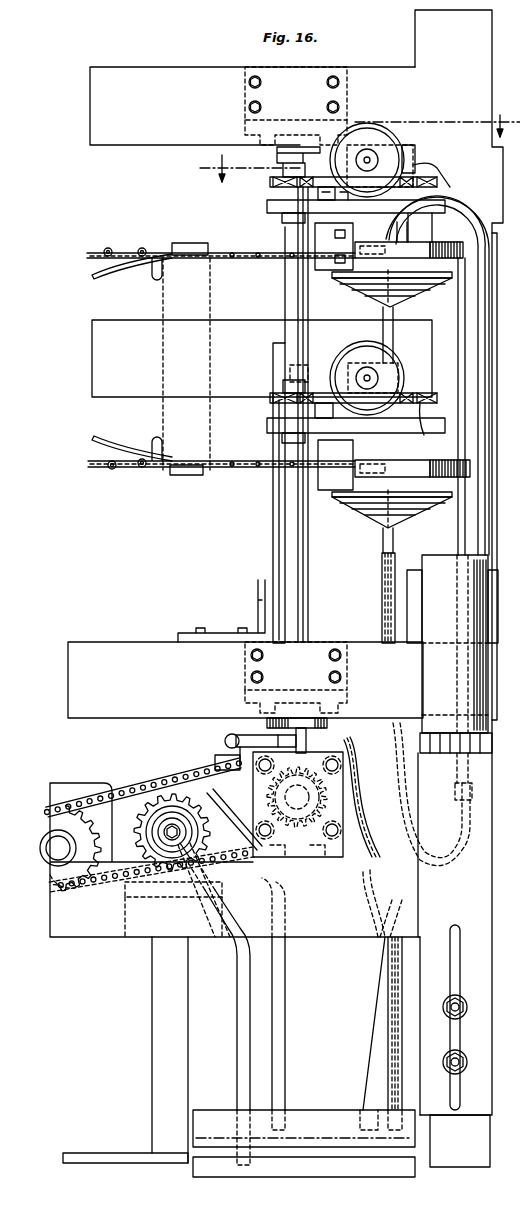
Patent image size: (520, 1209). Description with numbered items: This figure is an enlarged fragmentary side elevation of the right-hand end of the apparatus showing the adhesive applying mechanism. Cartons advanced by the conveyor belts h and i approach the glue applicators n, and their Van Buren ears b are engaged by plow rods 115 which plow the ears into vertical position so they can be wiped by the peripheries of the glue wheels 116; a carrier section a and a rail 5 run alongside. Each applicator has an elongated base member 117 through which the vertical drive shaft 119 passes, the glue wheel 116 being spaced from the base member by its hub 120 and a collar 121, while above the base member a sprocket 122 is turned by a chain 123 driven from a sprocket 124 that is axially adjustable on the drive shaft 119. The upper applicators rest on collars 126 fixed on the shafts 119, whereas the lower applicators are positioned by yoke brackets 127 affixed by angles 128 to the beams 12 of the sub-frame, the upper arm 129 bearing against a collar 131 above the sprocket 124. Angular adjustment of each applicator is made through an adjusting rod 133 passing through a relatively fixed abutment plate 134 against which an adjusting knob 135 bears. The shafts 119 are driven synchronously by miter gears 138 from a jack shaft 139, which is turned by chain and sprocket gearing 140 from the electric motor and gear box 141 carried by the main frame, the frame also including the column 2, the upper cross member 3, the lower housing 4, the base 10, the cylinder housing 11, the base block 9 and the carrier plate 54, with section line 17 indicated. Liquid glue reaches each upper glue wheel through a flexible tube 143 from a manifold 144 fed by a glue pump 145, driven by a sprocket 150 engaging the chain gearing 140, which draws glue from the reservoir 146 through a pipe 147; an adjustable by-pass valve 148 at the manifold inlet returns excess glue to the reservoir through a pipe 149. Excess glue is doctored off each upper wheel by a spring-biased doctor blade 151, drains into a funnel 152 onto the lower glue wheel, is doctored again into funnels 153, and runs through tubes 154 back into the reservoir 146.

The frame column 2 is at (488, 817).
The upper cross member 3 is at (142, 145).
The lower housing 4 is at (100, 937).
The guide rail 5 is at (180, 263).
The base block 9 is at (490, 1142).
The support base 10 is at (465, 692).
The cylinder housing 11 is at (452, 540).
The beams of the sub-frame 12 is at (88, 718).
The section line 17 is at (354, 137).
The carrier plate 54 is at (122, 322).
The plow rods 115 is at (95, 275).
The glue wheel 116 is at (465, 254).
The base member 117 is at (268, 210).
The vertical drive shaft 119 is at (285, 293).
The hub 120 is at (427, 232).
The collar 121 is at (440, 212).
The sprocket 122 is at (422, 187).
The chain 123 is at (285, 192).
The sprocket 124 is at (270, 183).
The collars 126 is at (283, 221).
The yoke brackets 127 is at (273, 516).
The angles 128 is at (258, 593).
The upper arm 129 is at (273, 352).
The collars 131 is at (290, 372).
The adjusting rod 133 is at (370, 160).
The abutment plate 134 is at (413, 165).
The adjusting knob 135 is at (370, 126).
The miter gears 138 is at (320, 735).
The jack shaft 139 is at (300, 832).
The chain and sprocket gearing 140 is at (115, 788).
The electric motor and gear box 141 is at (85, 785).
The flexible tube 143 is at (370, 825).
The manifold 144 is at (225, 741).
The glue pump 145 is at (135, 862).
The glue reservoir 146 is at (318, 1117).
The pipe 147 is at (237, 1047).
The by-pass valve 148 is at (215, 760).
The pipe 149 is at (285, 1047).
The sprocket 150 is at (172, 790).
The doctor blade 151 is at (375, 242).
The funnel 152 is at (358, 295).
The funnels 153 is at (375, 515).
The tubes 154 is at (386, 998).
The carrier section a is at (186, 364).
The Van Buren ears b is at (194, 249).
The conveyor belt h is at (124, 252).
The conveyor belt i is at (112, 468).
The glue applicators n is at (447, 460).